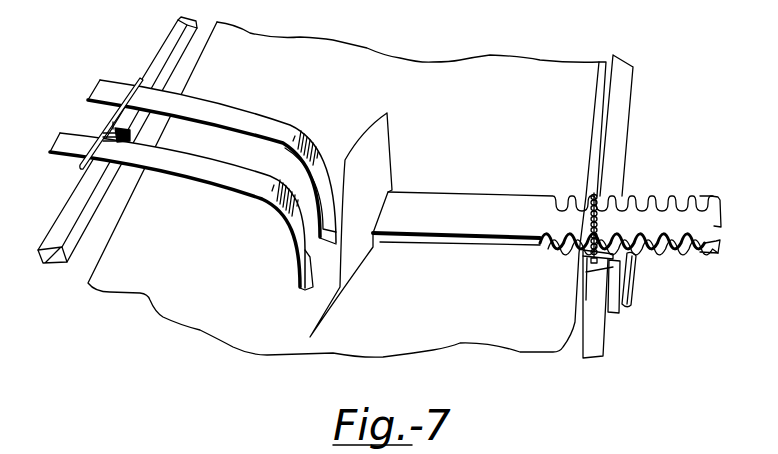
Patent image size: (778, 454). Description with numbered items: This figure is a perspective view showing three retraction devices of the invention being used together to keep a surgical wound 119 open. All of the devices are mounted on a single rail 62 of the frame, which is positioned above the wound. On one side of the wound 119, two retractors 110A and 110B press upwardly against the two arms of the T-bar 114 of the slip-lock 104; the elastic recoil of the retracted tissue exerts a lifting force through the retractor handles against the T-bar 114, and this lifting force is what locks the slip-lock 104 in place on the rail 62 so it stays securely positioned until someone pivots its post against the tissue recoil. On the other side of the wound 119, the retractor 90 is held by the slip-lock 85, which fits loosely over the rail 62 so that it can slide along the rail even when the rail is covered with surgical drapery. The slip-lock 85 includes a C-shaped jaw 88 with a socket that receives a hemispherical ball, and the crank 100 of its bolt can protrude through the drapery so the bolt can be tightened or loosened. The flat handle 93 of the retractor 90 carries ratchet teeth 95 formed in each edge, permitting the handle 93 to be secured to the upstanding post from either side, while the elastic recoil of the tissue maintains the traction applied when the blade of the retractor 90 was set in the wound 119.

The rail 62 is at (605, 350).
The slip-lock 85 is at (583, 277).
The C-shaped jaw 88 is at (617, 310).
The surgical retractor 90 is at (497, 195).
The handle 93 is at (460, 230).
The ratchet teeth 95 is at (647, 197).
The crank 100 is at (637, 278).
The slip-lock 104 is at (133, 143).
The retractor 110A is at (238, 173).
The retractor 110B is at (268, 115).
The T-bar 114 is at (97, 130).
The surgical wound 119 is at (367, 143).